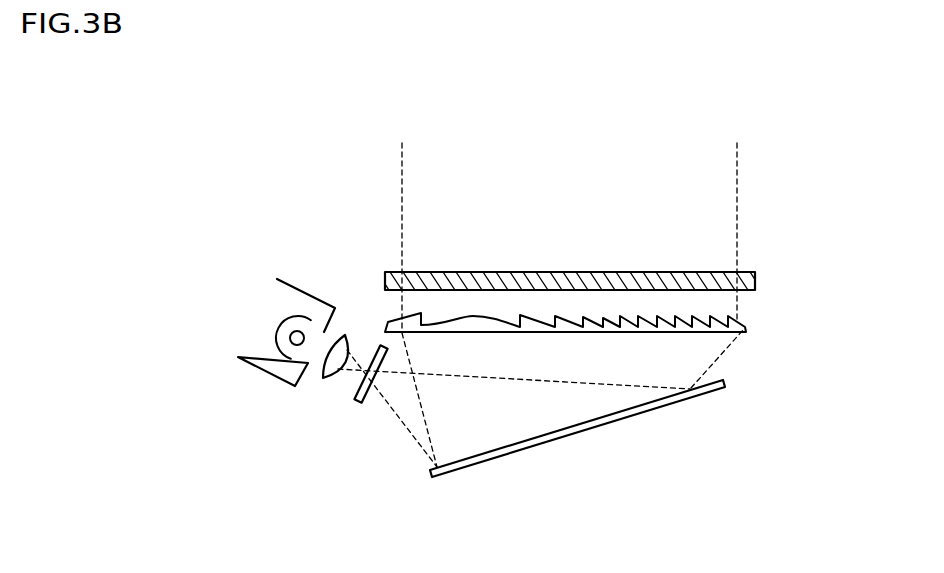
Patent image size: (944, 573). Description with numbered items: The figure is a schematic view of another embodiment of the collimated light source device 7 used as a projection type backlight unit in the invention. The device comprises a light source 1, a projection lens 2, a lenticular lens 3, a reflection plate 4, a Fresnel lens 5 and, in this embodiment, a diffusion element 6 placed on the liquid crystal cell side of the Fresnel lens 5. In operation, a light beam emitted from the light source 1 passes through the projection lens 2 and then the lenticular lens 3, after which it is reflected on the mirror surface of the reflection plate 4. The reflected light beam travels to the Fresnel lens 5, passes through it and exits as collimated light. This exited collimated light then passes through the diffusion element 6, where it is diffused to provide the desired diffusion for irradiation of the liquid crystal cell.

The light source 1 is at (263, 371).
The projection lens 2 is at (328, 378).
The lenticular lens 3 is at (358, 402).
The reflection plate 4 is at (678, 402).
The Fresnel lens 5 is at (745, 328).
The diffusion element 6 is at (756, 275).
The collimated light source device 7 is at (673, 167).